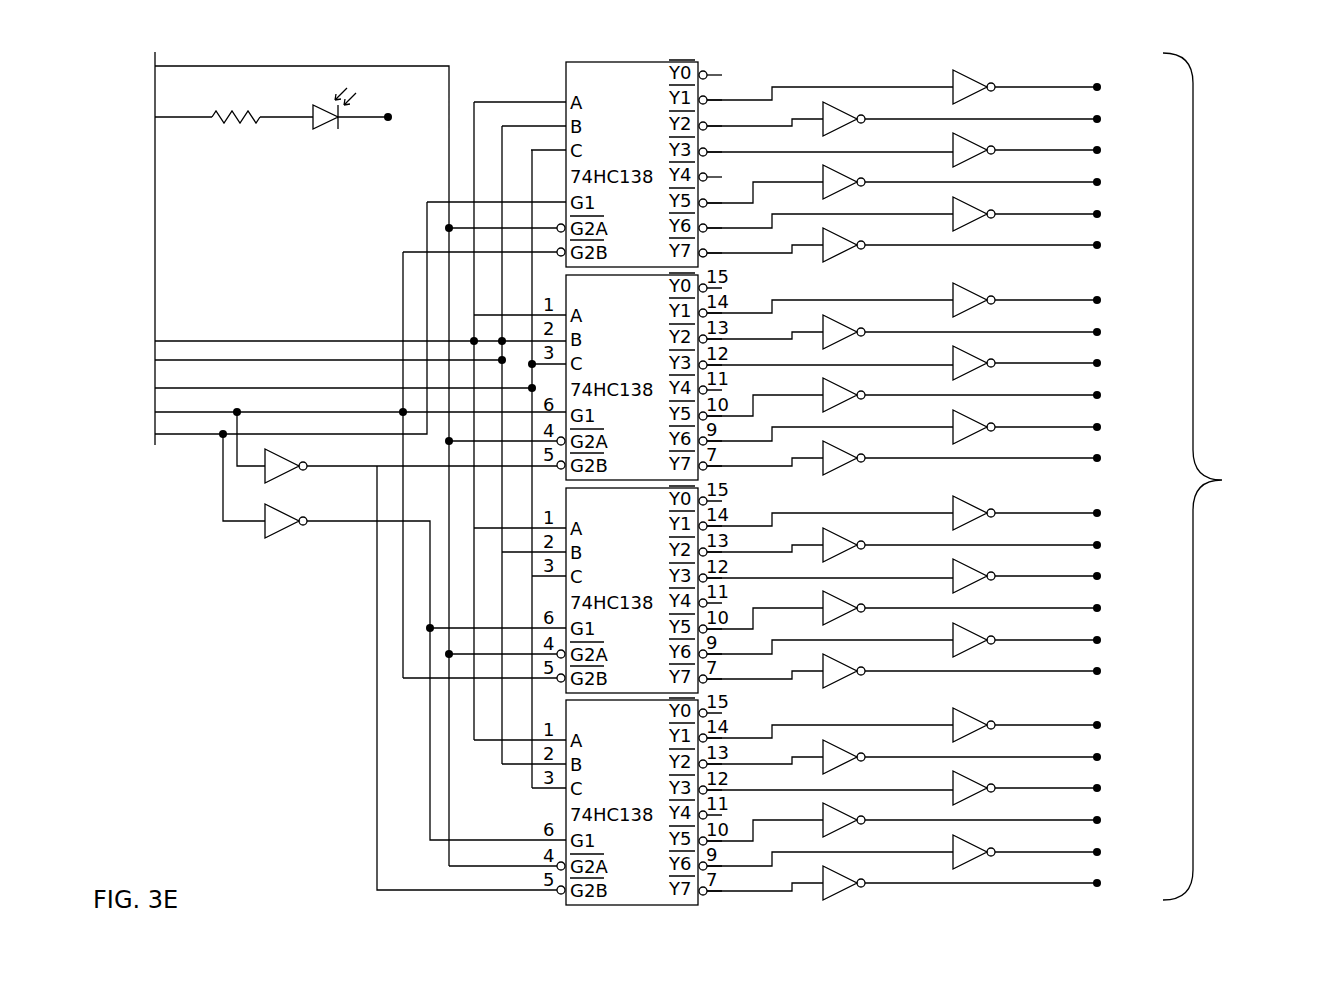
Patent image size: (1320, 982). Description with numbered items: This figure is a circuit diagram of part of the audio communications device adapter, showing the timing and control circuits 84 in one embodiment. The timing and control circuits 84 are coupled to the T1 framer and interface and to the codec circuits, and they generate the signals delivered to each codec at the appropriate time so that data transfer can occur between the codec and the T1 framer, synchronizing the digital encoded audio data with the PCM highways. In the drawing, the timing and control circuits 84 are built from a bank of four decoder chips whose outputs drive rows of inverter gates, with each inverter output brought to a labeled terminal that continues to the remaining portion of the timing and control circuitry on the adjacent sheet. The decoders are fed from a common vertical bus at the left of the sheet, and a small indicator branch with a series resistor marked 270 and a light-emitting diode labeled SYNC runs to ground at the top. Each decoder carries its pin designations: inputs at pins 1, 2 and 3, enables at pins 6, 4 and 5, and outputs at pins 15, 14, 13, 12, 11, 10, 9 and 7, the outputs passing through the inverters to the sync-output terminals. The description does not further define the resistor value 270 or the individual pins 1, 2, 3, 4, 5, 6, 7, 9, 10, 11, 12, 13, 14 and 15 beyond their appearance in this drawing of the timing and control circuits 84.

The timing and control circuits 84 is at (733, 480).
The resistor R12 (270 ohm) 270 is at (237, 116).
The pin 1 (input A) of decoder U20 1 is at (520, 91).
The pin 2 (input B) of decoder U20 2 is at (534, 115).
The pin 3 (input C) of decoder U20 3 is at (548, 139).
The pin 4 (G2A enable) of decoder U20 4 is at (503, 217).
The pin 5 (G2B enable) of decoder U20 5 is at (480, 241).
The pin 6 (G1 enable) of decoder U20 6 is at (496, 191).
The pin 7 (output Y7) of decoder U20 7 is at (710, 244).
The pin 9 (output Y6) of decoder U20 9 is at (710, 219).
The pin 10 (output Y5) of decoder U20 10 is at (714, 194).
The pin 11 (output Y4) of decoder U20 11 is at (714, 168).
The pin 12 (output Y3) of decoder U20 12 is at (714, 143).
The pin 13 (output Y2) of decoder U20 13 is at (714, 117).
The pin 14 (output Y1) of decoder U20 14 is at (714, 91).
The pin 15 (output Y0) of decoder U20 15 is at (714, 66).